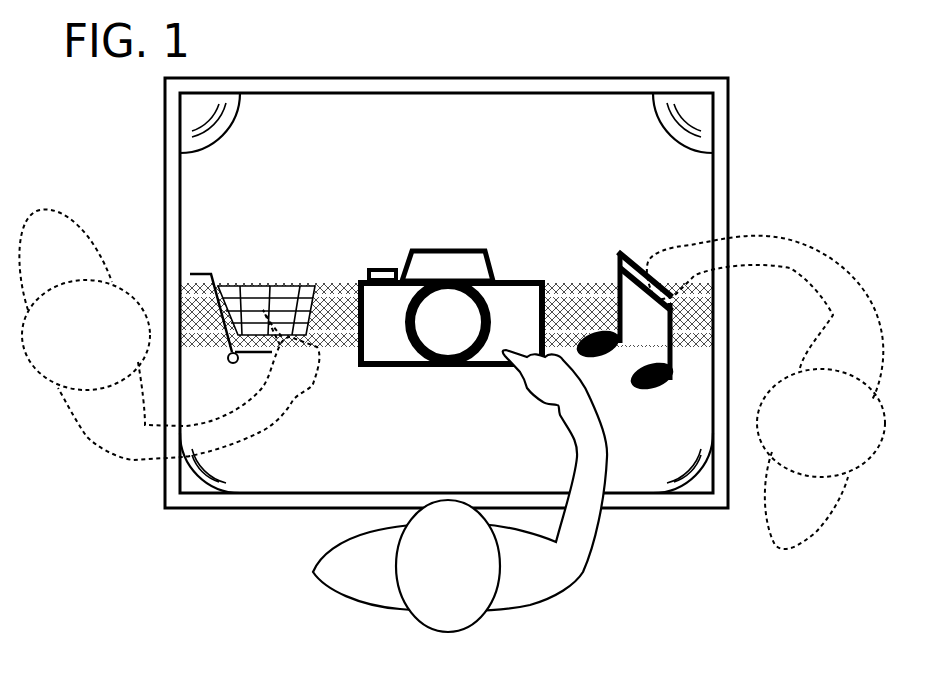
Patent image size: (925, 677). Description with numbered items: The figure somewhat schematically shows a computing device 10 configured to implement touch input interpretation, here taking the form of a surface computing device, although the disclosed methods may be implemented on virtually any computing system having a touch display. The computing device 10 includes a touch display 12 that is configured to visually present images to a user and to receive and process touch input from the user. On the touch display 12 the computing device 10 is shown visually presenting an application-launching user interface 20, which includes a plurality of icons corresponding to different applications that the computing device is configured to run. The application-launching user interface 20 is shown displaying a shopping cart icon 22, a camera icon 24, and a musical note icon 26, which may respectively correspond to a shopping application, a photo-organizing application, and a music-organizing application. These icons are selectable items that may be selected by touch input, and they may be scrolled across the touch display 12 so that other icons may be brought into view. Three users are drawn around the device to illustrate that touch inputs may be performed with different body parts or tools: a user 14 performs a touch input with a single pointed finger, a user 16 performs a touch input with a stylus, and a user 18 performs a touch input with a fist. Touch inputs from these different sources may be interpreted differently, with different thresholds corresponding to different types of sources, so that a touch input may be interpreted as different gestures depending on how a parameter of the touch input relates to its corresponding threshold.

The computing device 10 is at (469, 290).
The touch display 12 is at (158, 171).
The user 14 is at (463, 577).
The user 16 is at (99, 347).
The user 18 is at (836, 436).
The application-launching user interface 20 is at (210, 235).
The shopping cart icon 22 is at (229, 272).
The camera icon 24 is at (447, 236).
The musical note icon 26 is at (620, 240).